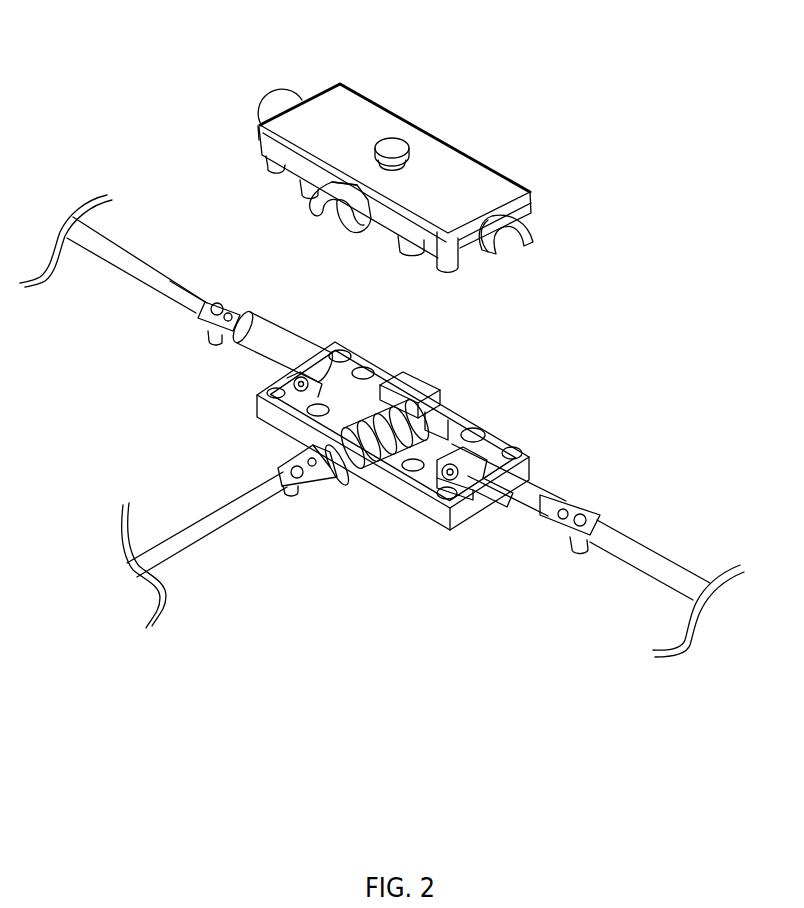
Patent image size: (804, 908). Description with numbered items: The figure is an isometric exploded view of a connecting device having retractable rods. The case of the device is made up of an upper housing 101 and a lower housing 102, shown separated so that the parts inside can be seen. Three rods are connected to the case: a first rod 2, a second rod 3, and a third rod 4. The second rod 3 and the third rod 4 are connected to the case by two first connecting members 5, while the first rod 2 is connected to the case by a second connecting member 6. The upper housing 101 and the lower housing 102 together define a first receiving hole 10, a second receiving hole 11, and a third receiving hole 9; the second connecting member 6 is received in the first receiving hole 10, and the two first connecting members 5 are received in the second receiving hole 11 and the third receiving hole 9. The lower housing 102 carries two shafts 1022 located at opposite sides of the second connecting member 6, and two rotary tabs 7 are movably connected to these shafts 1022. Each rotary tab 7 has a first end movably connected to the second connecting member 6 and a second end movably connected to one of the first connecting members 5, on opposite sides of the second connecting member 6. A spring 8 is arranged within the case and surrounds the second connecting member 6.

The first rod 2 is at (207, 530).
The second rod 3 is at (147, 263).
The third rod 4 is at (660, 560).
The first connecting member 5 is at (530, 487).
The second connecting member 6 is at (423, 393).
The rotary tab 7 is at (453, 475).
The spring 8 is at (382, 407).
The third receiving hole 9 is at (263, 107).
The first receiving hole 10 is at (328, 219).
The second receiving hole 11 is at (523, 247).
The upper housing 101 is at (430, 143).
The lower housing 102 is at (263, 412).
The shaft 1022 is at (452, 480).